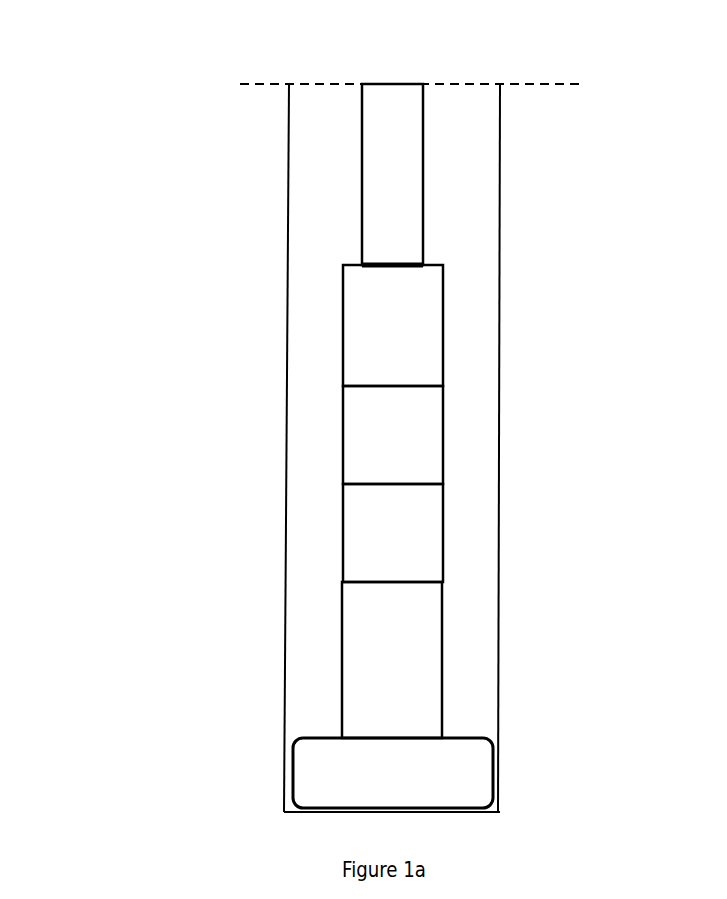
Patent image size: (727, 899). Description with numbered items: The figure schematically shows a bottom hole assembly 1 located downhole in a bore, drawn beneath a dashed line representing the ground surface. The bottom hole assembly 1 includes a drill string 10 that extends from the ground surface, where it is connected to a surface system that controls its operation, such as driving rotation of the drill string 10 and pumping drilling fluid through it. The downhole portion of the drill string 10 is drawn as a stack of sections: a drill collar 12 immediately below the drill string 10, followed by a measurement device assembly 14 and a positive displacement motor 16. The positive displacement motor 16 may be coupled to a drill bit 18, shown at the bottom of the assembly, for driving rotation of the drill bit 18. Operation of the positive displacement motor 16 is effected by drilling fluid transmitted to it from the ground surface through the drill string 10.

The bottom hole assembly 1 is at (163, 151).
The drill string 10 is at (397, 205).
The drill collar 12 is at (396, 329).
The measurement device assembly 14 is at (397, 449).
The positive displacement motor 16 is at (397, 538).
The drill bit 18 is at (395, 672).